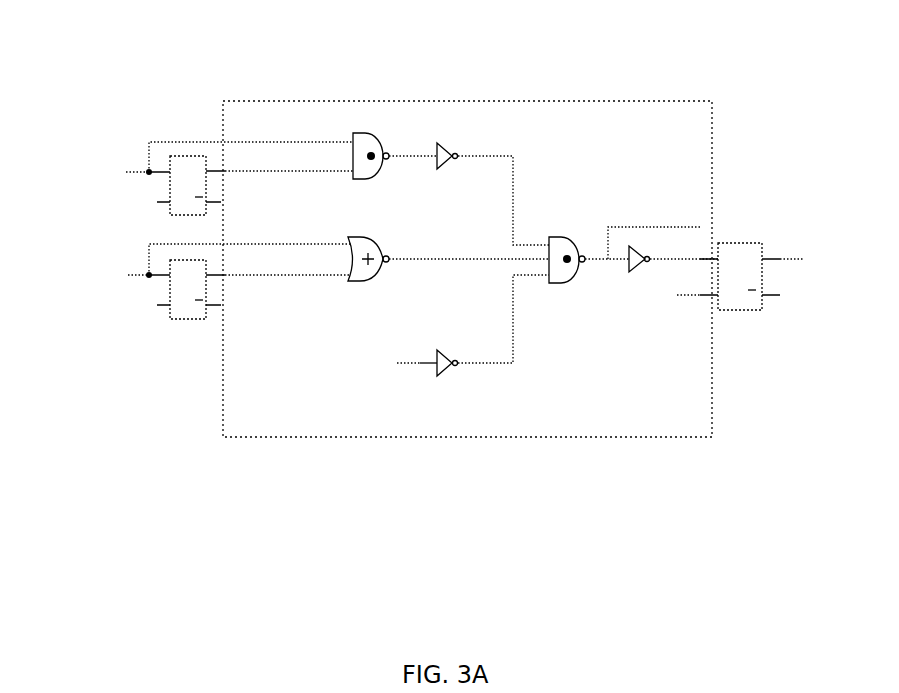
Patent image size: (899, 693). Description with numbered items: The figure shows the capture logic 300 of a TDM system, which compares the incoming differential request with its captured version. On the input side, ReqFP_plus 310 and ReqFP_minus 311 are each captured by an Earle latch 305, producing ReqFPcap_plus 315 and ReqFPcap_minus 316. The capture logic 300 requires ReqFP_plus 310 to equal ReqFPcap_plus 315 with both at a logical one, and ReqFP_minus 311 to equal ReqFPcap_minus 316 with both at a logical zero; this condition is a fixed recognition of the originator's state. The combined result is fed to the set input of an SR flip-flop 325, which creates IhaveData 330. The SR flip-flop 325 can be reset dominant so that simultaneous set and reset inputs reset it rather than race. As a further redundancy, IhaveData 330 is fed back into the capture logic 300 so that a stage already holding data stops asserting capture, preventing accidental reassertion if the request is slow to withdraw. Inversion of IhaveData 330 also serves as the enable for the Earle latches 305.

The capture logic 300 is at (604, 61).
The Earle latch 305 is at (141, 196).
The ReqFP_plus 310 is at (87, 152).
The ReqFP_minus 311 is at (104, 294).
The ReqFPcap_plus 315 is at (244, 150).
The ReqFPcap_minus 316 is at (248, 275).
The SR flip-flop 325 is at (720, 237).
The IhaveData 330 is at (822, 266).